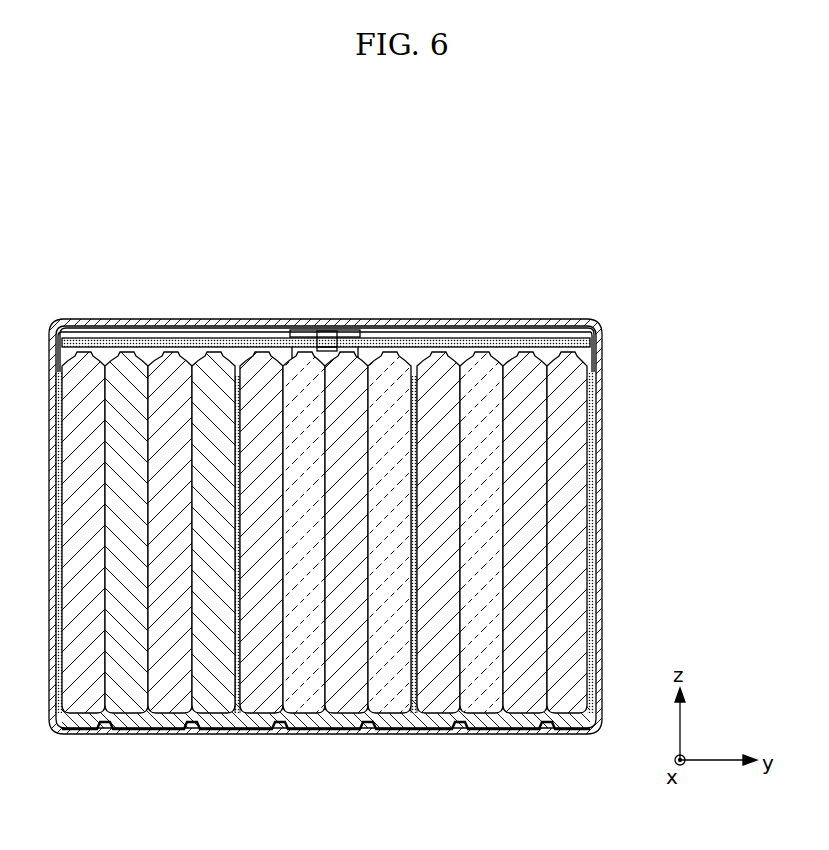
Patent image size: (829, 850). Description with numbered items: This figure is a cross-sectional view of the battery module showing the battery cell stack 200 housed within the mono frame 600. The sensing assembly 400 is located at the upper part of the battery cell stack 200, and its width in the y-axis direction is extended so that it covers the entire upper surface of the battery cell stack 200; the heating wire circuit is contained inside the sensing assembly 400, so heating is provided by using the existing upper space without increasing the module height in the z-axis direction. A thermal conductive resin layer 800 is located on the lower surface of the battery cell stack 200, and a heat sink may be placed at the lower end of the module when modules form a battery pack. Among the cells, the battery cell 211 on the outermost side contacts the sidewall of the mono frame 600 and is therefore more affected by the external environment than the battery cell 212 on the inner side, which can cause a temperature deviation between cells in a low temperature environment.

The battery cell stack 200 is at (376, 576).
The battery cell located on the outermost side 211 is at (567, 582).
The battery cell located on the inner side 212 is at (353, 520).
The sensing assembly 400 is at (492, 345).
The mono frame 600 is at (601, 431).
The thermal conductive resin layer 800 is at (502, 720).